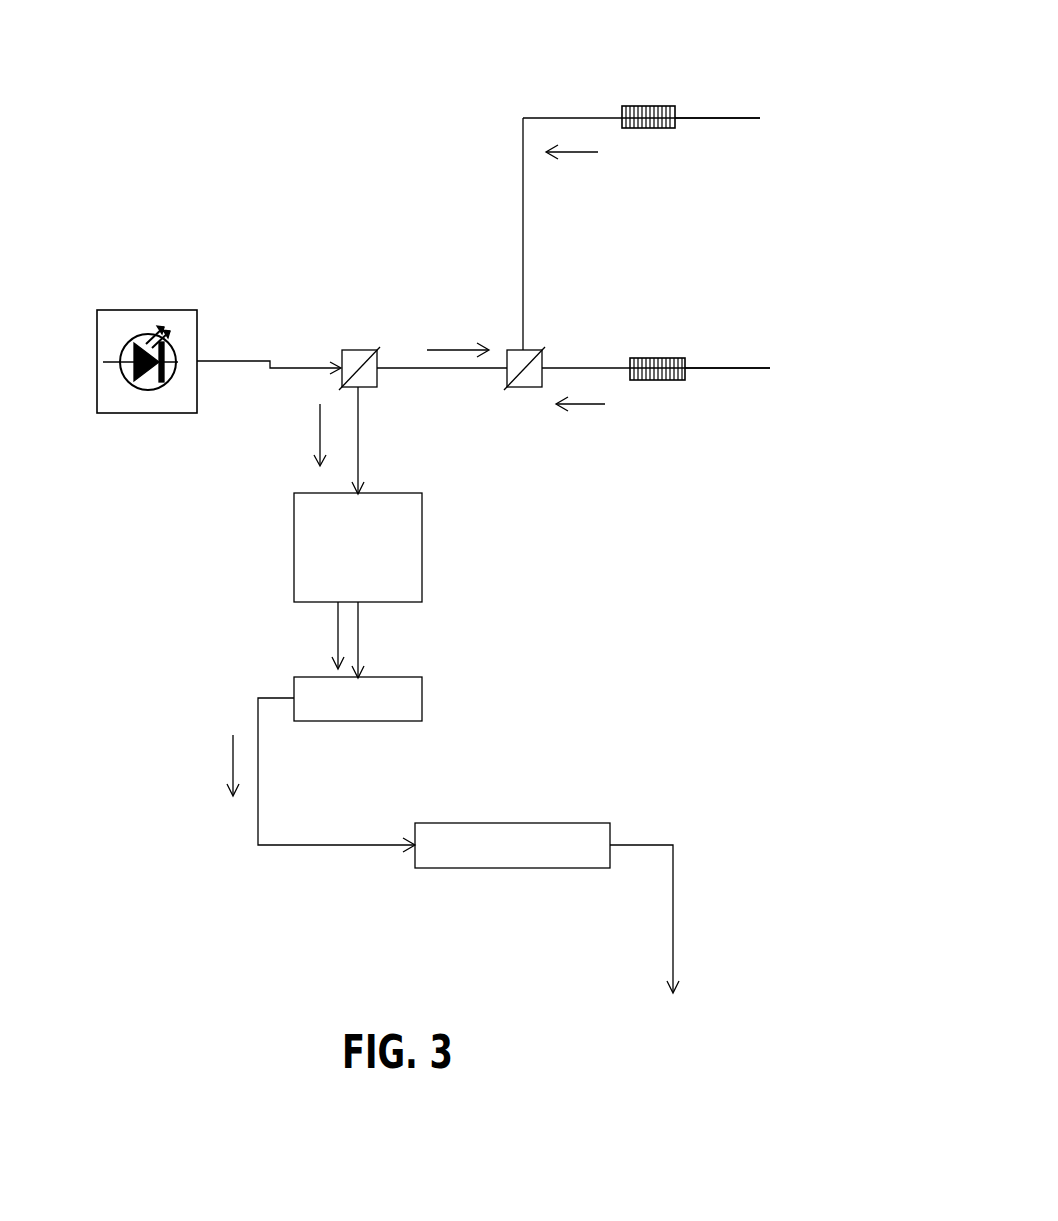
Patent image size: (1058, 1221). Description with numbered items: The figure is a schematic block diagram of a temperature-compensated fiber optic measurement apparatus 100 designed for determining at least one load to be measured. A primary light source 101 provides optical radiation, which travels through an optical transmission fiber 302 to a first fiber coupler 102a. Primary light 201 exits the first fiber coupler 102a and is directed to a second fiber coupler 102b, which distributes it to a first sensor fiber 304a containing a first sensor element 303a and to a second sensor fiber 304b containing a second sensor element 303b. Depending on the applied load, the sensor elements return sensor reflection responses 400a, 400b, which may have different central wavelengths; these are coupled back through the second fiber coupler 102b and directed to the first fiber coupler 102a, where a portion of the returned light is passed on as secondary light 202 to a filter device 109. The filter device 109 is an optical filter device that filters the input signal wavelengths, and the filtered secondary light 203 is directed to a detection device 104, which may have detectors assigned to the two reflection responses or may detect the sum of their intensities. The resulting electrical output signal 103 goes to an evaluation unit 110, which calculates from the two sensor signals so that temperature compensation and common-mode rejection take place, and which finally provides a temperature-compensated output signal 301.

The fiber optic measurement apparatus 100 is at (293, 47).
The primary light source 101 is at (147, 310).
The optical transmission fiber 302 is at (242, 361).
The first fiber coupler 102a is at (357, 350).
The primary light 201 is at (457, 350).
The secondary light 202 is at (322, 430).
The second fiber coupler 102b is at (523, 388).
The first sensor element 303a is at (648, 106).
The second sensor element 303b is at (658, 358).
The first sensor fiber 304a is at (704, 118).
The second sensor fiber 304b is at (717, 368).
The first sensor reflection response 400a is at (572, 152).
The second sensor reflection response 400b is at (583, 405).
The filter device 109 is at (294, 548).
The filtered secondary light 203 is at (338, 630).
The detection device 104 is at (422, 698).
The electrical output signal 103 is at (233, 758).
The evaluation unit 110 is at (513, 869).
The temperature-compensated output signal 301 is at (673, 900).